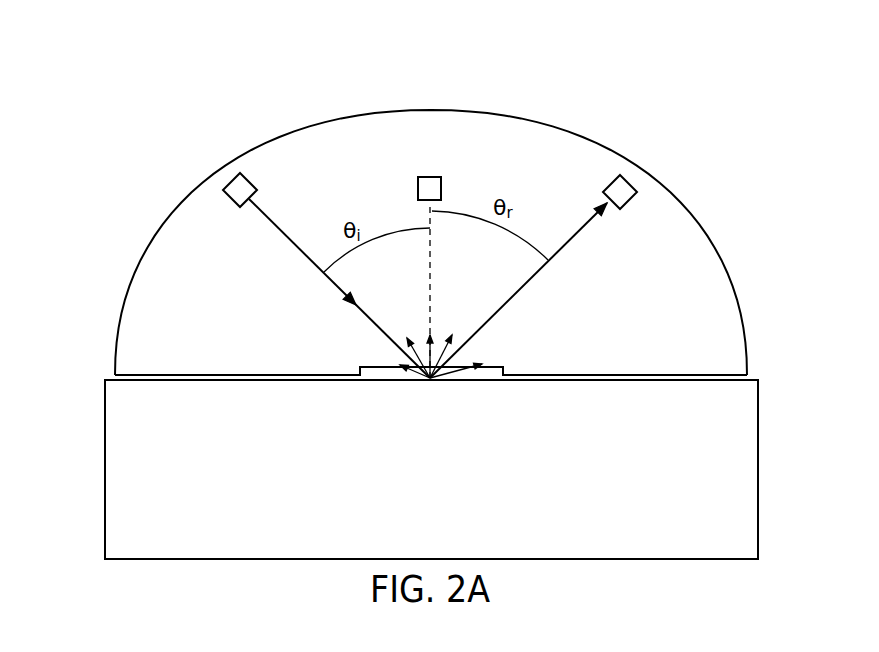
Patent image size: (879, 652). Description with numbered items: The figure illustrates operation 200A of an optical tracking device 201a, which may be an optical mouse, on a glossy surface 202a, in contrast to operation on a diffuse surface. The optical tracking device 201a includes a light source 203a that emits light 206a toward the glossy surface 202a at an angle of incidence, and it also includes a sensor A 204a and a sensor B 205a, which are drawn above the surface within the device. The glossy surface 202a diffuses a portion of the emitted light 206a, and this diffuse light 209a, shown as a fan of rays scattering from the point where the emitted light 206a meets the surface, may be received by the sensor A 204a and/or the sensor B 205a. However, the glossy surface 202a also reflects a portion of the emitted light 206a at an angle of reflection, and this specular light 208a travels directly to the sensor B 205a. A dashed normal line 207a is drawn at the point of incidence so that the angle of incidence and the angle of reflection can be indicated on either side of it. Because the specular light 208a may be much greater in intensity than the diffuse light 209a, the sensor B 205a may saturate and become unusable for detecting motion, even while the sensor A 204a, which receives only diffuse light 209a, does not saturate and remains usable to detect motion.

The operation of optical tracking device on glossy surface 200A is at (146, 83).
The optical tracking device 201a is at (165, 218).
The glossy surface 202a is at (150, 379).
The light source 203a is at (225, 182).
The sensor A 204a is at (418, 181).
The sensor B 205a is at (637, 200).
The emitted light 206a is at (280, 232).
The surface normal 207a is at (428, 208).
The specular light 208a is at (530, 289).
The diffuse light 209a is at (430, 378).